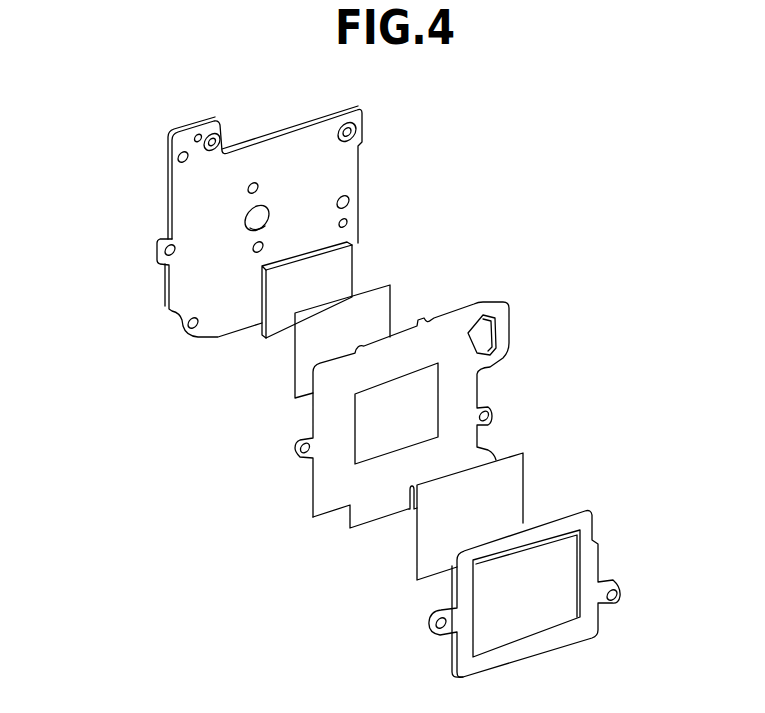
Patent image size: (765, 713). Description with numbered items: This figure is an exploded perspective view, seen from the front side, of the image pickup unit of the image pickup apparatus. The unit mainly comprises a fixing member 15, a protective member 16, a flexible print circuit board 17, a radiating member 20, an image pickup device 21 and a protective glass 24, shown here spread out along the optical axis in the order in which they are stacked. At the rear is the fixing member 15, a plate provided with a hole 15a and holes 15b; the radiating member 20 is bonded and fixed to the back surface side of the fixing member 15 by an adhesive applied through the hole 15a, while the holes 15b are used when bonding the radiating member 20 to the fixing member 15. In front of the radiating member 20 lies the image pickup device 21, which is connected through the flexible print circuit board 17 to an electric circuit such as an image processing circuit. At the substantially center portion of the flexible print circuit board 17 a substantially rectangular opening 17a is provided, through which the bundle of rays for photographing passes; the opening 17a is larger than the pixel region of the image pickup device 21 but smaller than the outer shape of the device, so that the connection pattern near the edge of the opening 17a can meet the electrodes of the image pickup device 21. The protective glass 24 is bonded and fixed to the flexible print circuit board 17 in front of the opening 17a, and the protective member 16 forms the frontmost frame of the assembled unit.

The fixing member 15 is at (332, 175).
The hole 15a is at (265, 212).
The holes 15b is at (254, 244).
The protective member 16 is at (588, 562).
The flexible print circuit board 17 is at (440, 340).
The opening 17a is at (398, 414).
The radiating member 20 is at (332, 278).
The image pickup device 21 is at (365, 316).
The protective glass 24 is at (497, 496).